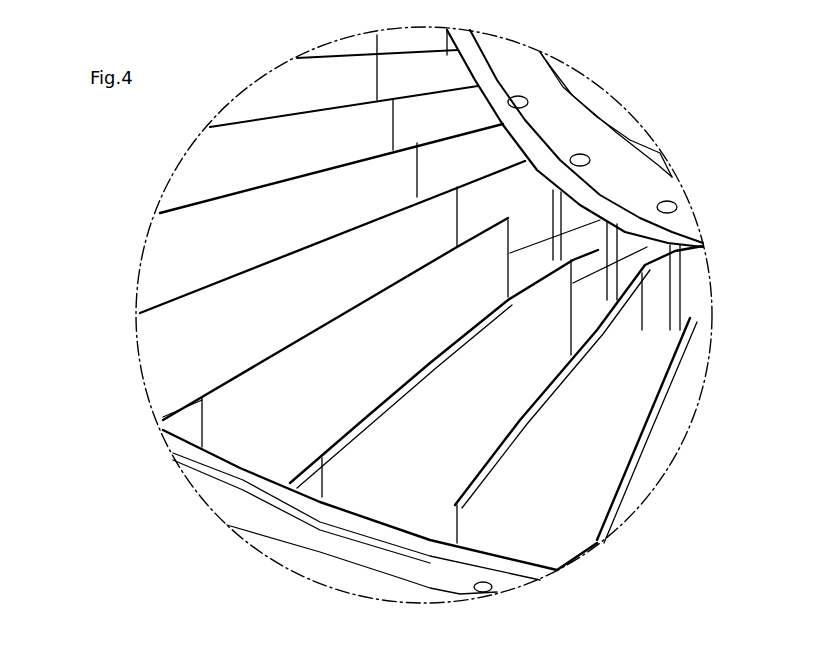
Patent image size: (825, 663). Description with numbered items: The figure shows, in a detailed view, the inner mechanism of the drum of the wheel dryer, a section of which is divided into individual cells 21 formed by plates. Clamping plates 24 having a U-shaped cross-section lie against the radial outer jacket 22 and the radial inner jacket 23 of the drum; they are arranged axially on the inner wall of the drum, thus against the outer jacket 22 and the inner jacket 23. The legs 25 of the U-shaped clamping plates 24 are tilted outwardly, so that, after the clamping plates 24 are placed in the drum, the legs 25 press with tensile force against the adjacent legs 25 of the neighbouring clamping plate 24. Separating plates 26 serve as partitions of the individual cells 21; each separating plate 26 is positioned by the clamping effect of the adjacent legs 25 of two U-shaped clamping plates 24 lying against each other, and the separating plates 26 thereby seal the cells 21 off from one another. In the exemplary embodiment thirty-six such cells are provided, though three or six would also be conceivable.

The cells 21 is at (262, 293).
The outer jacket 22 is at (243, 470).
The inner jacket 23 is at (605, 206).
The clamping plates 24 is at (380, 497).
The legs 25 is at (562, 218).
The separating plates 26 is at (600, 331).